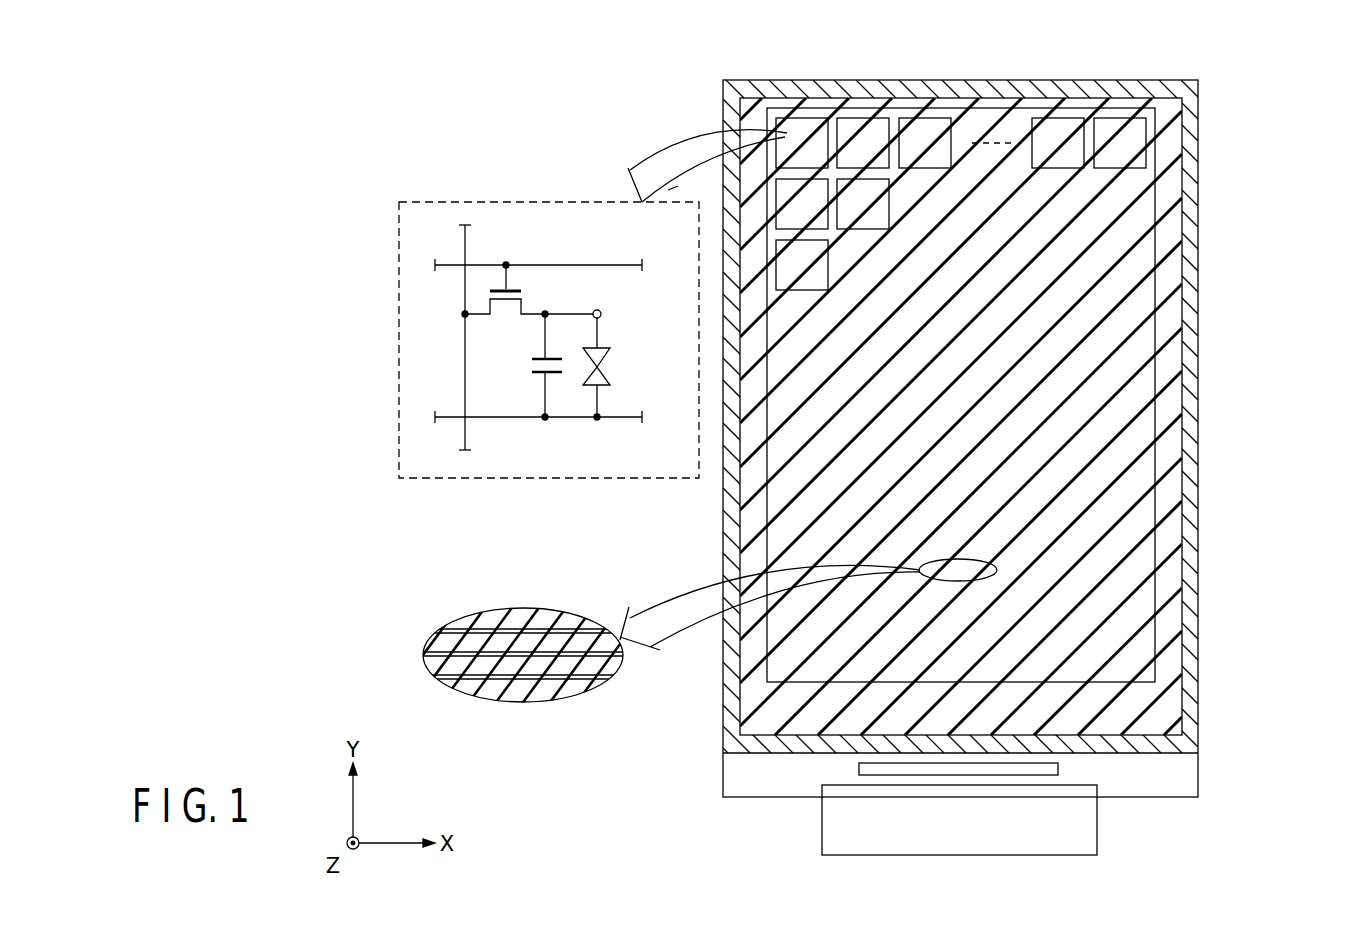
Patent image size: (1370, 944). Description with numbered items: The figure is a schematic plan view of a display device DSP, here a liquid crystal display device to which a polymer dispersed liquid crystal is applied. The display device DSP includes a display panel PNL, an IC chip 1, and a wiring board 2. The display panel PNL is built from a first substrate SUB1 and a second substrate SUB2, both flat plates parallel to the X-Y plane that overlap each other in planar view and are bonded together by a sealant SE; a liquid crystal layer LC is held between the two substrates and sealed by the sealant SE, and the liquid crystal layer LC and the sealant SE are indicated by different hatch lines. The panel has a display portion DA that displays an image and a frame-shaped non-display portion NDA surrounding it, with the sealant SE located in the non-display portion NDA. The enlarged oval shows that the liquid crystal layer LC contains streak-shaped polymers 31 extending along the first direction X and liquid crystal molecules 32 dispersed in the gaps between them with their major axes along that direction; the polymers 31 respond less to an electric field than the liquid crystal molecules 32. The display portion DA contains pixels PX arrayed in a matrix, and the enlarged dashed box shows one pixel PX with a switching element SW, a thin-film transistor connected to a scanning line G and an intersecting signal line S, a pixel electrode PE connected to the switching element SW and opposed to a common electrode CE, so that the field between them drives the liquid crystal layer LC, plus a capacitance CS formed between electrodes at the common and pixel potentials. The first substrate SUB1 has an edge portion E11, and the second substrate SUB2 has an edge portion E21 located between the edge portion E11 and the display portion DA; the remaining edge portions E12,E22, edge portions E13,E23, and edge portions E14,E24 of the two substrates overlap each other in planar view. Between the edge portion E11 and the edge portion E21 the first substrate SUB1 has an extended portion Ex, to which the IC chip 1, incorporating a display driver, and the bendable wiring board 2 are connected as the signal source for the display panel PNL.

The display panel PNL is at (857, 447).
The display device DSP is at (1290, 124).
The first substrate SUB1 is at (1190, 778).
The second substrate SUB2 is at (1190, 742).
The display portion DA is at (1165, 490).
The non-display portion NDA is at (1200, 543).
The sealant SE is at (1186, 637).
The liquid crystal layer LC is at (790, 538).
The pixel PX is at (910, 118).
The edge portion E11 is at (745, 797).
The edge portion E21 is at (800, 753).
The edge portions E12,E22 is at (722, 537).
The edge portions E13,E23 is at (1200, 417).
The edge portions E14,E24 is at (975, 80).
The extended portion Ex is at (735, 775).
The IC chip 1 is at (1060, 770).
The wiring board 2 is at (1099, 845).
The polymers 31 is at (435, 663).
The liquid crystal molecules 32 is at (505, 678).
The scanning line G is at (450, 262).
The signal line S is at (462, 348).
The switching element SW is at (538, 300).
The pixel electrode PE is at (605, 314).
The capacitance CS is at (524, 371).
The common electrode CE is at (623, 420).